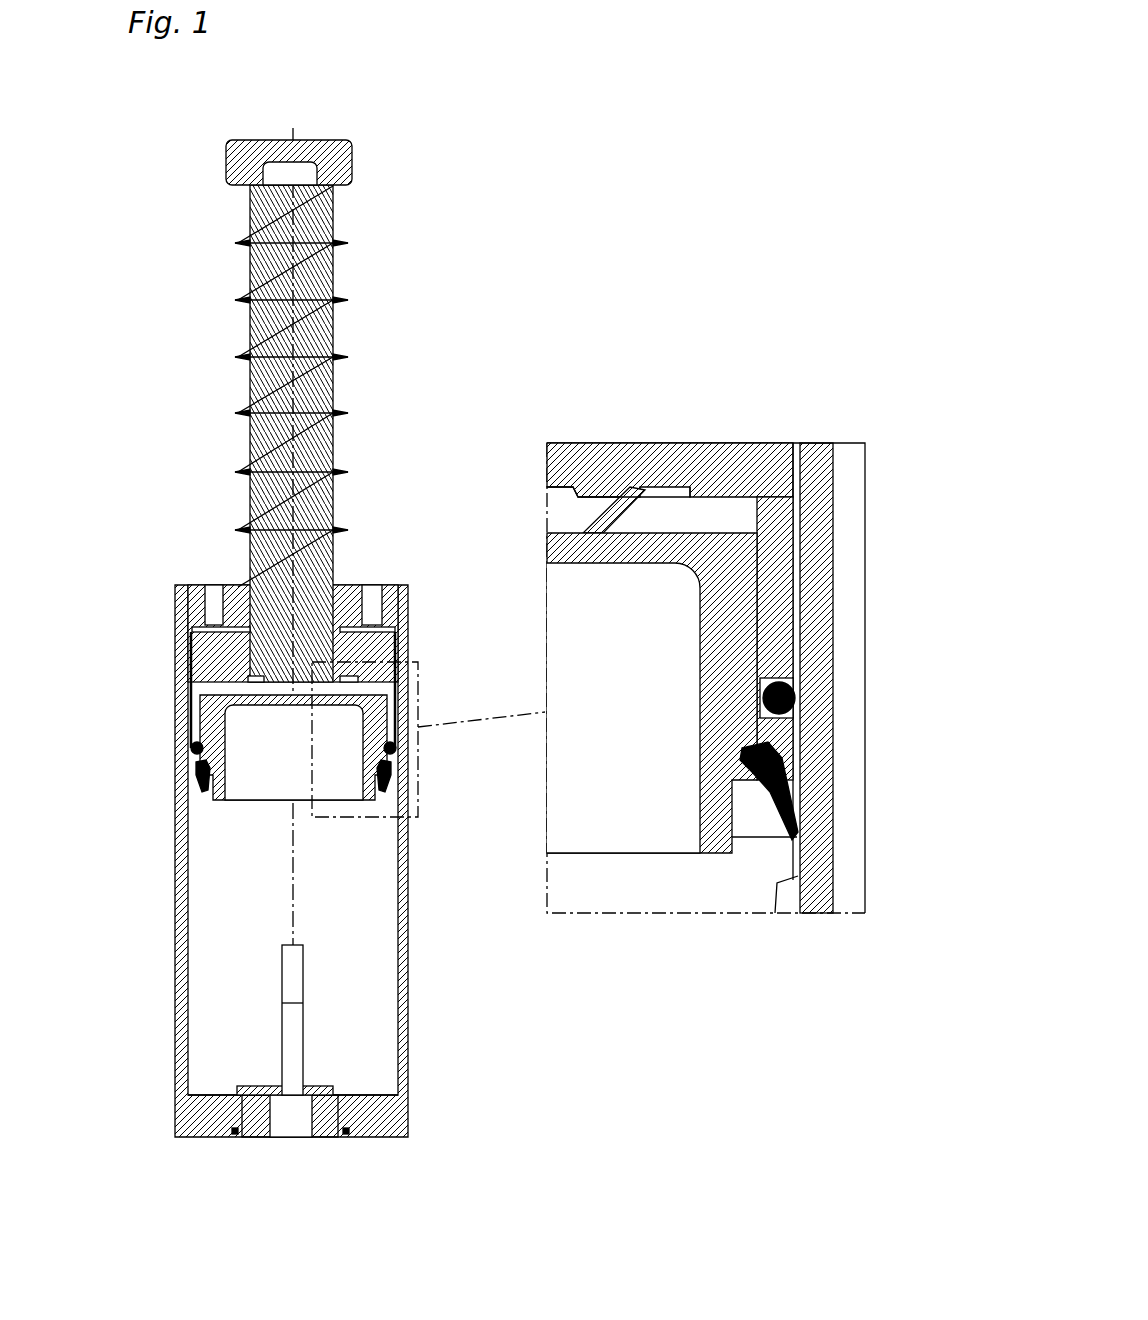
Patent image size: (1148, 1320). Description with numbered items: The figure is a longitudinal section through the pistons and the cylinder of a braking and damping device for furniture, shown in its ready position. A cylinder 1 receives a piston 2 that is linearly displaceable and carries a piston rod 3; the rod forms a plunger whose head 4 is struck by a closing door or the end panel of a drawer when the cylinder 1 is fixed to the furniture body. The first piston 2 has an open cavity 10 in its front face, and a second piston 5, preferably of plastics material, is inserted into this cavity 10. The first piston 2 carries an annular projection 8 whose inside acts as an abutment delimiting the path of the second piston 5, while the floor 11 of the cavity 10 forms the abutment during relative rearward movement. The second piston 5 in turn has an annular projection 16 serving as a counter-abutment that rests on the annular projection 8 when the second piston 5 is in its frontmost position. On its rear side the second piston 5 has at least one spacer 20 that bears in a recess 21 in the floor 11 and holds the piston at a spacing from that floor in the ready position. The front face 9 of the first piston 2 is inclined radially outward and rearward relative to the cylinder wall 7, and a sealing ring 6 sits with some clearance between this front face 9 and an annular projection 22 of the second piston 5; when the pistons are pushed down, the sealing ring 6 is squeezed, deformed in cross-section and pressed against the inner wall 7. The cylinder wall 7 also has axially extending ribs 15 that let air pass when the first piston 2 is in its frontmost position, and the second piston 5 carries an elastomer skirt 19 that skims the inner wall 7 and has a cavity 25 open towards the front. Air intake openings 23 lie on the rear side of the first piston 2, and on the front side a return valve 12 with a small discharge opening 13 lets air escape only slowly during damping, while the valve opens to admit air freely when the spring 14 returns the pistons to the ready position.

The cylinder 1 is at (412, 978).
The piston 2 is at (408, 583).
The piston rod 3 is at (317, 225).
The head 4 is at (340, 160).
The second piston 5 is at (182, 728).
The sealing ring 6 is at (396, 740).
The cylinder wall 7 is at (780, 882).
The annular projection 8 is at (178, 746).
The front face 9 is at (800, 672).
The cavity 10 is at (400, 656).
The floor 11 is at (180, 647).
The return valve 12 is at (235, 1130).
The discharge opening 13 is at (294, 1105).
The spring 14 is at (345, 300).
The ribs 15 is at (403, 1082).
The annular projection 16 is at (178, 682).
The skirt 19 is at (395, 788).
The spacer 20 is at (187, 587).
The recess 21 is at (364, 582).
The annular projection 22 is at (790, 752).
The air intake openings 23 is at (208, 590).
The cavity 25 is at (258, 783).